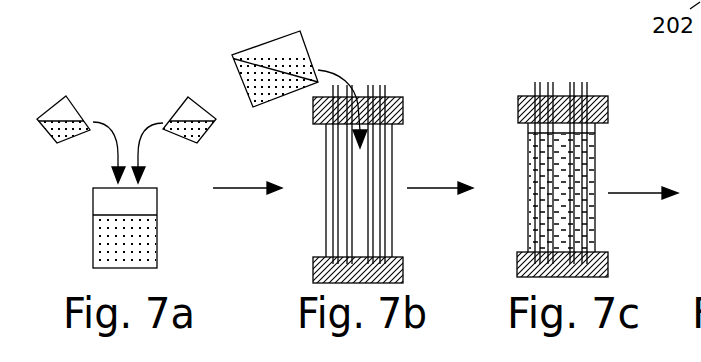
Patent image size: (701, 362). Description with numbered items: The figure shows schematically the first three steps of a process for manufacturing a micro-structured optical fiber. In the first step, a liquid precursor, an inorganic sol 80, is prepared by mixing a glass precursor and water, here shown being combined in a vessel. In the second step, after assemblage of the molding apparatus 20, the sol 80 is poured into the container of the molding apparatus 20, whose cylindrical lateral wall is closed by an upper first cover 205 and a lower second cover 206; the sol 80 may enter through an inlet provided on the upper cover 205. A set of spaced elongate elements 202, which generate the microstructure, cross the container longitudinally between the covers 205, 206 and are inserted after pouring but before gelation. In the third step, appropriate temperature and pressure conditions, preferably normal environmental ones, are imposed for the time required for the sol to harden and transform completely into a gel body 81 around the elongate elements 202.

In FIG. 7a, the inorganic sol 80 is at (107, 232).
In FIG. 7b, the inorganic sol 80 is at (237, 73).
In FIG. 7b, the molding apparatus 20 is at (323, 215).
In FIG. 7b, the spaced elongate elements 202 is at (372, 148).
In FIG. 7b, the first cover 205 is at (403, 100).
In FIG. 7b, the second cover 206 is at (403, 268).
In FIG. 7c, the gel body 81 is at (560, 157).